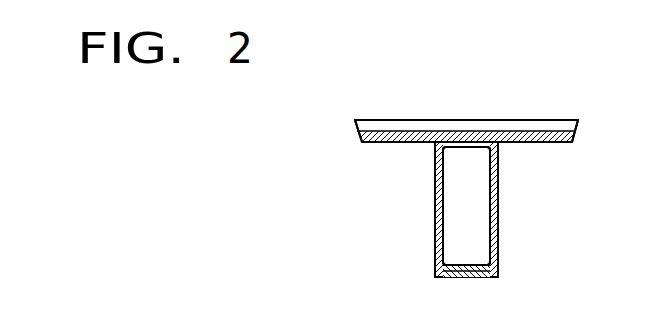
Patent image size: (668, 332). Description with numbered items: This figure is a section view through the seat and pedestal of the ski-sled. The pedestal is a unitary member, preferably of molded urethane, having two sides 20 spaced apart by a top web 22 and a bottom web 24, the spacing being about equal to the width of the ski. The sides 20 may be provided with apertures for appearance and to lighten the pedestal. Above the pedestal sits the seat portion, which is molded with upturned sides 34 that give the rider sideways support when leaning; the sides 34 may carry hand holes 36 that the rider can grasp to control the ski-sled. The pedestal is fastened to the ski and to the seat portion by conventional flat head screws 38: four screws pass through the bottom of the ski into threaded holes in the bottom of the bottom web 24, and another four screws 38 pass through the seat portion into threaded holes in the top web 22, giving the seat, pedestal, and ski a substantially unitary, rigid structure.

The sides 20 is at (435, 211).
The top web 22 is at (466, 150).
The bottom web 24 is at (461, 264).
The upturned sides 34 is at (356, 121).
The hand holes 36 is at (358, 132).
The flat head screws 38 is at (453, 138).